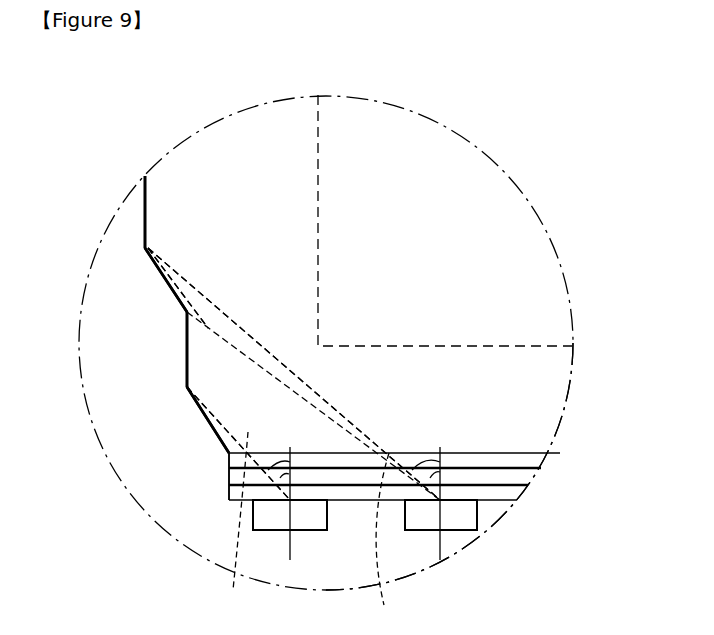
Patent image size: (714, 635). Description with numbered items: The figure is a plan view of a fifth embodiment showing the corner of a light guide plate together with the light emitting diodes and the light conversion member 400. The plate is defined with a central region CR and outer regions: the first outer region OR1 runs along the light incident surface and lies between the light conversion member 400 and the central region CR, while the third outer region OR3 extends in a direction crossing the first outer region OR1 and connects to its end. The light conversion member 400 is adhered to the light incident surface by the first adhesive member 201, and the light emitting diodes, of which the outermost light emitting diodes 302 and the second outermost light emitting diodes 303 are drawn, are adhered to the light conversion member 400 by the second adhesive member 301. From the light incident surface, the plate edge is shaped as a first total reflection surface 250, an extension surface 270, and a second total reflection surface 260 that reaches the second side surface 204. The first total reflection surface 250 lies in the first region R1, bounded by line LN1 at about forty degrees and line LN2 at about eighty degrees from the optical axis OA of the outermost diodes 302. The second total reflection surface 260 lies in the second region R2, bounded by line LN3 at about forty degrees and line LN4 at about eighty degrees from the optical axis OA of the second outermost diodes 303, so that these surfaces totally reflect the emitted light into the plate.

The second side surface 204 is at (145, 210).
The second total reflection surface 260 is at (166, 282).
The second region R2 is at (222, 320).
The extension surface 270 is at (187, 350).
The first total reflection surface 250 is at (205, 423).
The first region R1 is at (228, 452).
The first adhesive member 201 is at (228, 463).
The light conversion member 400 is at (228, 477).
The second adhesive member 301 is at (228, 492).
The outermost light emitting diodes 302 is at (290, 530).
The second outermost light emitting diodes 303 is at (440, 530).
The optical axis OA is at (366, 495).
The line LN1 is at (232, 437).
The line LN2 is at (234, 521).
The line LN3 is at (367, 433).
The line LN4 is at (384, 541).
The first outer region OR1 is at (535, 400).
The third outer region OR3 is at (233, 147).
The central region CR is at (476, 197).